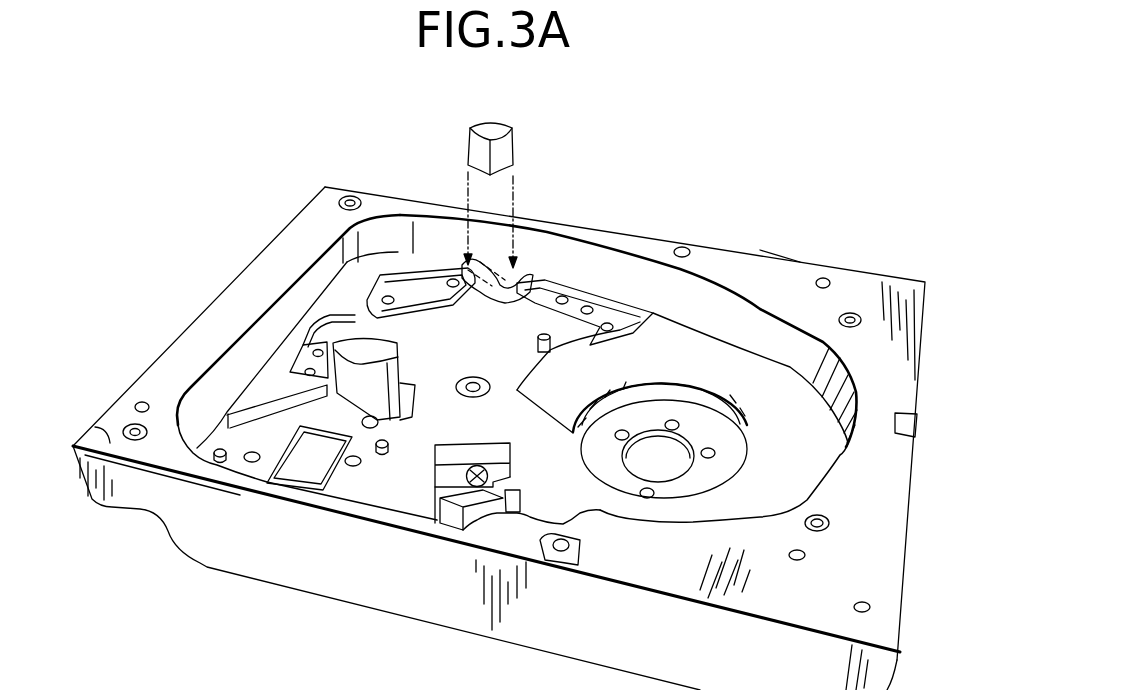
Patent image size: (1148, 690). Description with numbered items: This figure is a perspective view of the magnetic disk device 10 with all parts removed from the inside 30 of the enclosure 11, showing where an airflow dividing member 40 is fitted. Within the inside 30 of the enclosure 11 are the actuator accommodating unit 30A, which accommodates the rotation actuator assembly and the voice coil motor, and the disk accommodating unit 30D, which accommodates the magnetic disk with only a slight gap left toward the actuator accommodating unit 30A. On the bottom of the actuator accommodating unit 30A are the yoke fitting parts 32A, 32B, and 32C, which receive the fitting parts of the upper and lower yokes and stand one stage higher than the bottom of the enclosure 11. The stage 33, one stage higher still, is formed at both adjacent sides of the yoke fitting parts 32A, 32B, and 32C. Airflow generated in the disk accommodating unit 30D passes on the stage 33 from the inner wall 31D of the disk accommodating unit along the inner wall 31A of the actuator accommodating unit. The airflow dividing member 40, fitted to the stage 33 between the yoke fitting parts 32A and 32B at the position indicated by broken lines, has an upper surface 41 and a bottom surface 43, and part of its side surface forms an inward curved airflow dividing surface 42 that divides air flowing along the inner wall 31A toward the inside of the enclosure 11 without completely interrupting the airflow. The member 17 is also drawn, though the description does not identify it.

The magnetic disk device 10 is at (688, 160).
The enclosure 11 is at (787, 273).
The latch member 17 is at (470, 455).
The inside of the enclosure 30 is at (378, 486).
The actuator accommodating unit 30A is at (481, 352).
The disk accommodating unit 30D is at (792, 413).
The inner wall of the actuator accommodating unit 31A is at (268, 307).
The inner wall of the disk accommodating unit 31D is at (733, 306).
The yoke fitting part 32A is at (577, 300).
The yoke fitting part 32B is at (417, 290).
The yoke fitting part 32C is at (307, 345).
The stage 33 is at (253, 388).
The airflow dividing member 40 is at (513, 191).
The upper surface 41 is at (480, 130).
The airflow dividing surface 42 is at (512, 118).
The bottom surface 43 is at (470, 173).